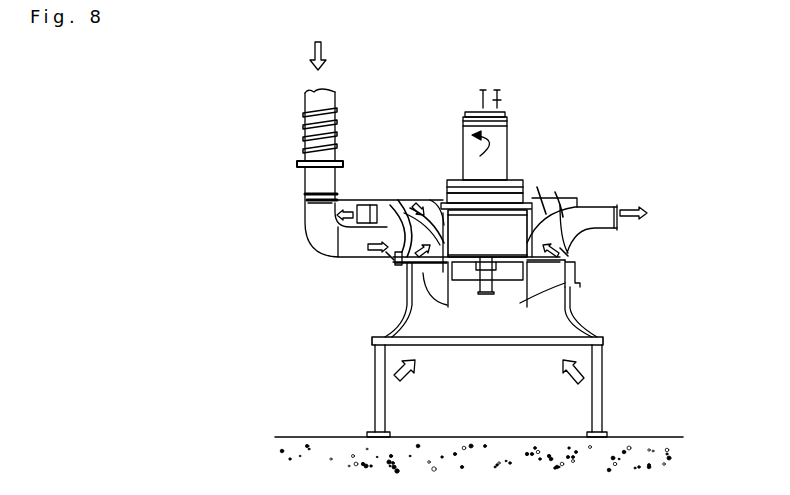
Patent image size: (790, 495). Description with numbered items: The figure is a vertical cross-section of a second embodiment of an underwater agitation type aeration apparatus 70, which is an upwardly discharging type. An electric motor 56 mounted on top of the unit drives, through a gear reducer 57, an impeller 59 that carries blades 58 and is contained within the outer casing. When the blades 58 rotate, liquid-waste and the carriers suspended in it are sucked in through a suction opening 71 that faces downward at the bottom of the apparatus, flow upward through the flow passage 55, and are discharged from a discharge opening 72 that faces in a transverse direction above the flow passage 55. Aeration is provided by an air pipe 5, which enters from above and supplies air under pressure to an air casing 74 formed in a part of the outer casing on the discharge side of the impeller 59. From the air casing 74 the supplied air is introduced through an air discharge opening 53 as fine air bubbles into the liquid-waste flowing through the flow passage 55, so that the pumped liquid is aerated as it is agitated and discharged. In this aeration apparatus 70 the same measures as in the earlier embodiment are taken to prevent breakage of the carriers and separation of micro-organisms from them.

The air pipe 5 is at (307, 178).
The air discharge opening 53 is at (593, 213).
The flow passage 55 is at (600, 207).
The electric motor 56 is at (502, 134).
The gear reducer 57 is at (502, 244).
The blades 58 is at (405, 305).
The impeller 59 is at (478, 272).
The aeration apparatus 70 is at (690, 174).
The suction opening 71 is at (553, 334).
The discharge opening 72 is at (630, 220).
The air casing 74 is at (392, 257).